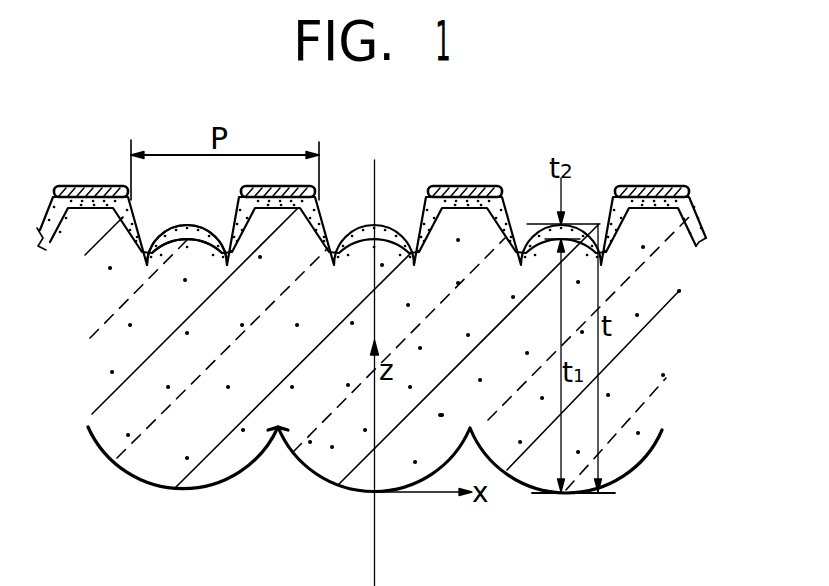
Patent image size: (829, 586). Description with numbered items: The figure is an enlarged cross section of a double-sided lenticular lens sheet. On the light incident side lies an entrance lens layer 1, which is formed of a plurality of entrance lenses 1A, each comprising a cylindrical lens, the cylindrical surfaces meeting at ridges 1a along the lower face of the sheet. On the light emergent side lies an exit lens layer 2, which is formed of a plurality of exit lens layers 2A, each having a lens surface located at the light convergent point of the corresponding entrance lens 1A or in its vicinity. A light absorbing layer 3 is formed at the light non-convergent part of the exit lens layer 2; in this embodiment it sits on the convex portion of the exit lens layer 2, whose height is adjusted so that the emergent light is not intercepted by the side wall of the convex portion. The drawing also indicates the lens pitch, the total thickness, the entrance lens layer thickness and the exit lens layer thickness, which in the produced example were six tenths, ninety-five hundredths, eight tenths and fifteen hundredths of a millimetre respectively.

The entrance lens layer 1 is at (367, 376).
The entrance lens 1A is at (163, 490).
The ridge/cusp between lens surfaces 1a is at (278, 432).
The exit lens layer 2 is at (361, 226).
The exit lens layer 2A is at (212, 200).
The light absorbing layer 3 is at (80, 183).